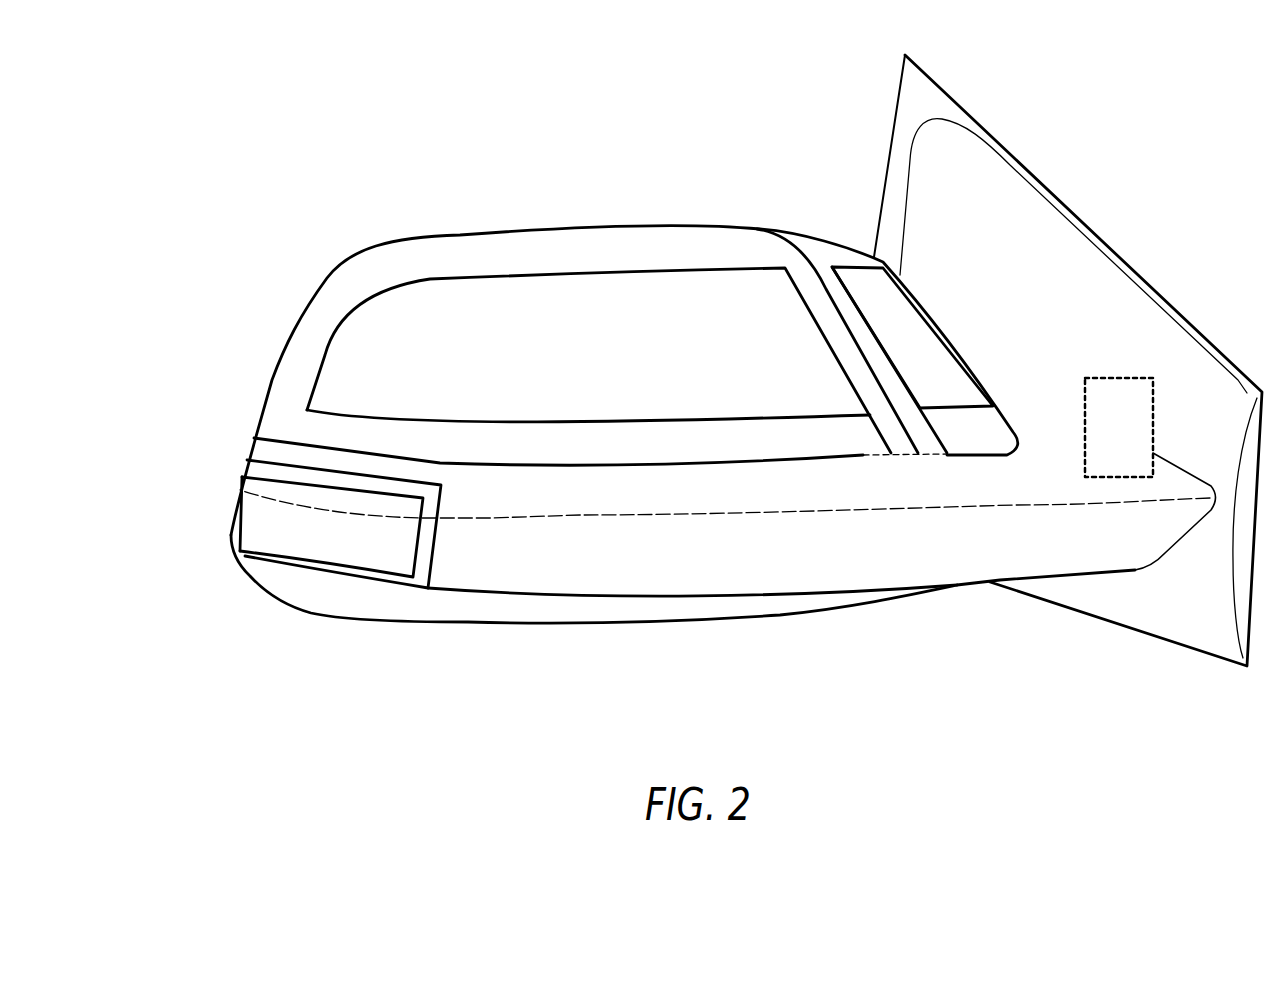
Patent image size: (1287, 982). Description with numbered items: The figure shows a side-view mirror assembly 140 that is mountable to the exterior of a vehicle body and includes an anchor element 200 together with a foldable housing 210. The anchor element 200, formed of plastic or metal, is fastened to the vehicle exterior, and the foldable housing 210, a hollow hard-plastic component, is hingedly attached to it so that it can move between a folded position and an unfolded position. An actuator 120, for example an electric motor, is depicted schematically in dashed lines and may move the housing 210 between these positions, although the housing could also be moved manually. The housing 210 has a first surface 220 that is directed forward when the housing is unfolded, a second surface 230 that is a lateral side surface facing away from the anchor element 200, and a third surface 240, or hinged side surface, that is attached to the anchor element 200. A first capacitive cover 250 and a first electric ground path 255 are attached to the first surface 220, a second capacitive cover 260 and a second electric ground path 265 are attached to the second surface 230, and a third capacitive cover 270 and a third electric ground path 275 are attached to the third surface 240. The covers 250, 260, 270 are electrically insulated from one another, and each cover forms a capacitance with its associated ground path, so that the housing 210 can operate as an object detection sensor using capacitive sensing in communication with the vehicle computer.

The side-view mirror assembly 140 is at (581, 110).
The anchor element 200 is at (1072, 205).
The foldable housing 210 is at (642, 622).
The first surface 220 is at (598, 362).
The second surface 230 is at (329, 552).
The third surface 240 is at (923, 362).
The first capacitive cover 250 is at (393, 353).
The first electric ground path 255 is at (443, 237).
The second capacitive cover 260 is at (265, 523).
The second electric ground path 265 is at (320, 588).
The third capacitive cover 270 is at (893, 307).
The third electric ground path 275 is at (993, 455).
The actuator 120 is at (985, 374).